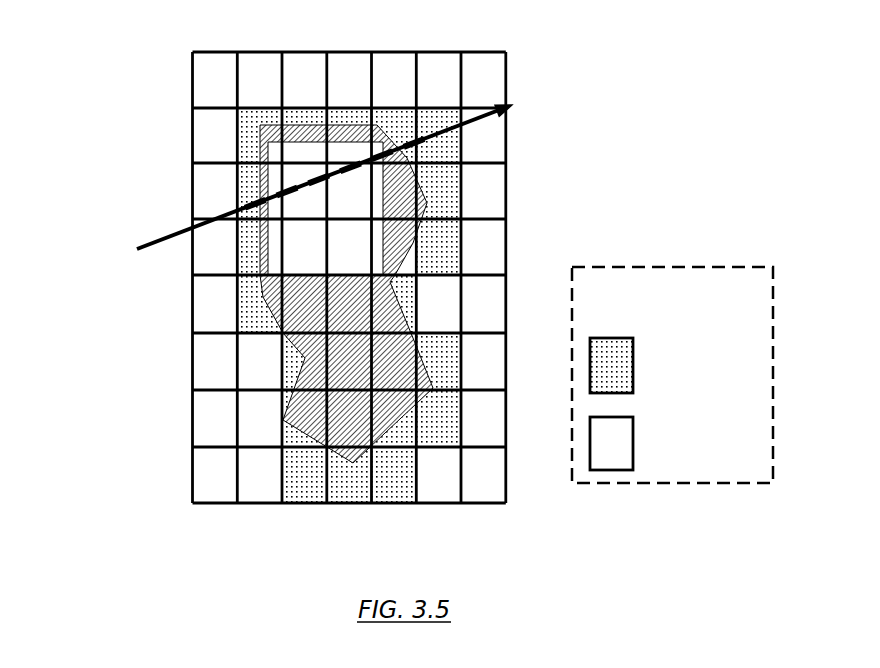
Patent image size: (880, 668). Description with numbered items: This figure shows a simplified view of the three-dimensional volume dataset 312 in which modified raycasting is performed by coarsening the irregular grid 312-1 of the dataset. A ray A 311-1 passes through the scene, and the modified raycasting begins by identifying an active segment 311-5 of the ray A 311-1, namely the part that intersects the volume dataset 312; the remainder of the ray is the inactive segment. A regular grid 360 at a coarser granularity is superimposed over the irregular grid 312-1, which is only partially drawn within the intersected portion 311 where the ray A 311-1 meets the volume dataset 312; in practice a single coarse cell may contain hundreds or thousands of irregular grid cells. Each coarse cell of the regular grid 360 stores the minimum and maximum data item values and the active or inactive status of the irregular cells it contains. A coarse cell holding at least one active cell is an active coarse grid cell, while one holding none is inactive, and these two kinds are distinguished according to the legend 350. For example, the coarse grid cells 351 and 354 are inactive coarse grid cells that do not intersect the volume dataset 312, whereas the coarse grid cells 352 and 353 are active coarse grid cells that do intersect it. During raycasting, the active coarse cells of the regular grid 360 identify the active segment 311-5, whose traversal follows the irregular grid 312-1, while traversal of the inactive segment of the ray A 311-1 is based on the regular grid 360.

The regular grid 360 is at (520, 69).
The 3D volume dataset 312 is at (347, 104).
The irregular grid 312-1 is at (367, 195).
The ray A 311-1 is at (159, 218).
The active segment 311-5 is at (288, 172).
The intersected portion 311 is at (370, 266).
The inactive coarse grid cell 351 is at (232, 260).
The active coarse grid cell 352 is at (273, 188).
The active coarse grid cell 353 is at (410, 130).
The inactive coarse grid cell 354 is at (457, 160).
The legend 350 is at (723, 293).